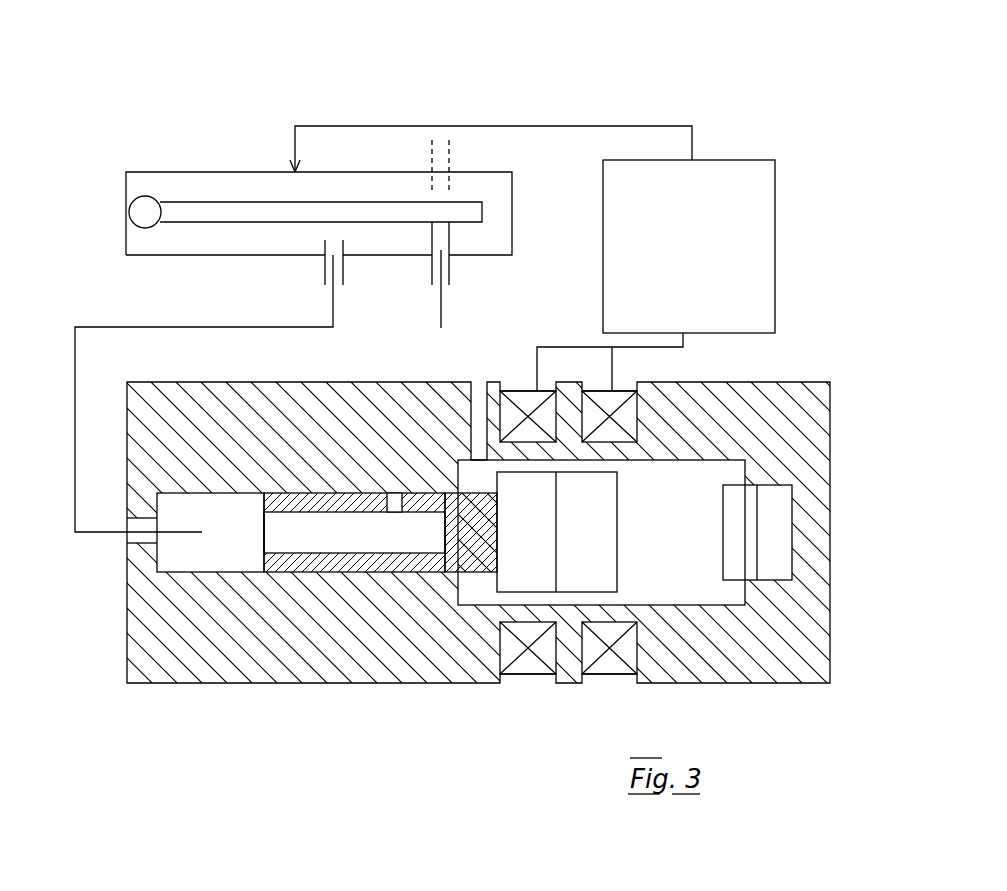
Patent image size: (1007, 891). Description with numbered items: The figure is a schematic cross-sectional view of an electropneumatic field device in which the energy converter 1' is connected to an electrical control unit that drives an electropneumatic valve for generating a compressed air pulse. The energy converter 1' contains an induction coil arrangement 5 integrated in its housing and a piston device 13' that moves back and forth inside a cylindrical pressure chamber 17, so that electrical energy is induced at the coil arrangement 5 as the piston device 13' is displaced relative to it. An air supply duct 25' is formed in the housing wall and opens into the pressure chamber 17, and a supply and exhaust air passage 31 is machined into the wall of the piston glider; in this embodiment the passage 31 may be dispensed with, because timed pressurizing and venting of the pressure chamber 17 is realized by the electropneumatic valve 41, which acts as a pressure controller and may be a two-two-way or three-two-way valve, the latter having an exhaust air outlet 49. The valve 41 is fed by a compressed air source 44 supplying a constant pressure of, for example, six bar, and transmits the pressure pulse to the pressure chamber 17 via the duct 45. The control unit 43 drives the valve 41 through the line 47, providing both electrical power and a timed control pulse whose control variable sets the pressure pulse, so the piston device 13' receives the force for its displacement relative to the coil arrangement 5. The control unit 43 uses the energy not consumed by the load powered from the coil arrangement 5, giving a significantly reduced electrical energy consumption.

The energy converter 1' is at (503, 571).
The induction coil arrangement 5 is at (563, 702).
The piston device 13' is at (377, 631).
The pressure chamber 17 is at (233, 500).
The air supply duct 25' is at (156, 634).
The supply and exhaust air passage 31 is at (397, 493).
The electropneumatic valve 41 is at (233, 170).
The control unit 43 is at (705, 211).
The compressed air source 44 is at (441, 328).
The duct 45 is at (120, 326).
The line 47 is at (535, 126).
The exhaust air outlet 49 is at (432, 148).